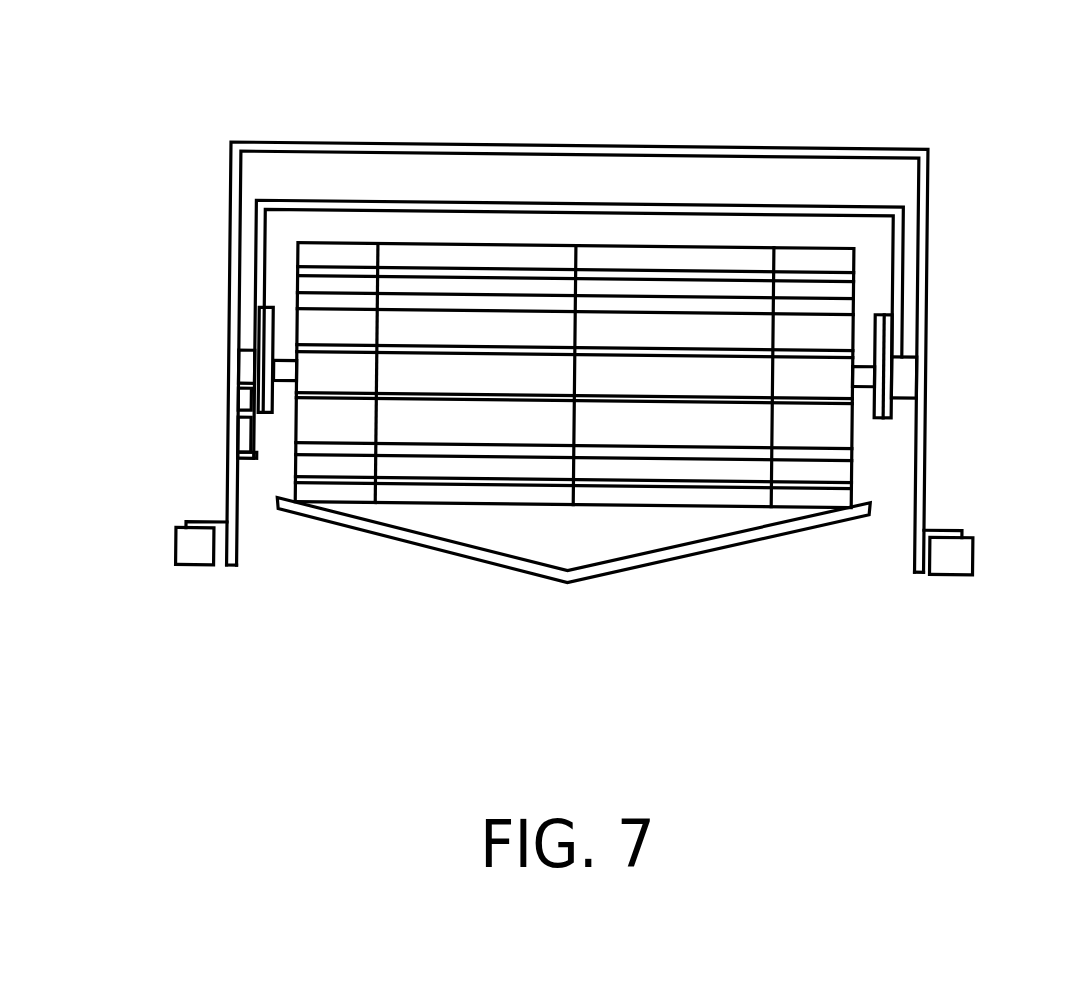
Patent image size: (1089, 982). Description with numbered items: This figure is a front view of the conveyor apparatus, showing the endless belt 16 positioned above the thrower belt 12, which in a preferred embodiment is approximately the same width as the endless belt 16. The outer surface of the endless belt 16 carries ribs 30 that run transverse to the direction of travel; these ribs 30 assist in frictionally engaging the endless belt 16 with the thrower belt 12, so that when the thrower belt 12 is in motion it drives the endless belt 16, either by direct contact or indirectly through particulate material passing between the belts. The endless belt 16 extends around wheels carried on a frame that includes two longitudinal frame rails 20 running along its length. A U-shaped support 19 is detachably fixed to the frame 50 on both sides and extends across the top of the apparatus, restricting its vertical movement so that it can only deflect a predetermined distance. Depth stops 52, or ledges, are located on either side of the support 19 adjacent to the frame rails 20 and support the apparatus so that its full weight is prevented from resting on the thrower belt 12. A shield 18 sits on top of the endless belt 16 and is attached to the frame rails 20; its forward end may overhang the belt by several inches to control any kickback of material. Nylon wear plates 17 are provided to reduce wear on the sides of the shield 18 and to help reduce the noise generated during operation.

The thrower belt 12 is at (648, 565).
The endless belt 16 is at (310, 253).
The nylon wear plates 17 is at (227, 377).
The shield 18 is at (740, 208).
The support 19 is at (928, 193).
The frame rails 20 is at (902, 322).
The ribs 30 is at (480, 402).
The frame 50 is at (968, 578).
The depth stops 52 is at (247, 418).